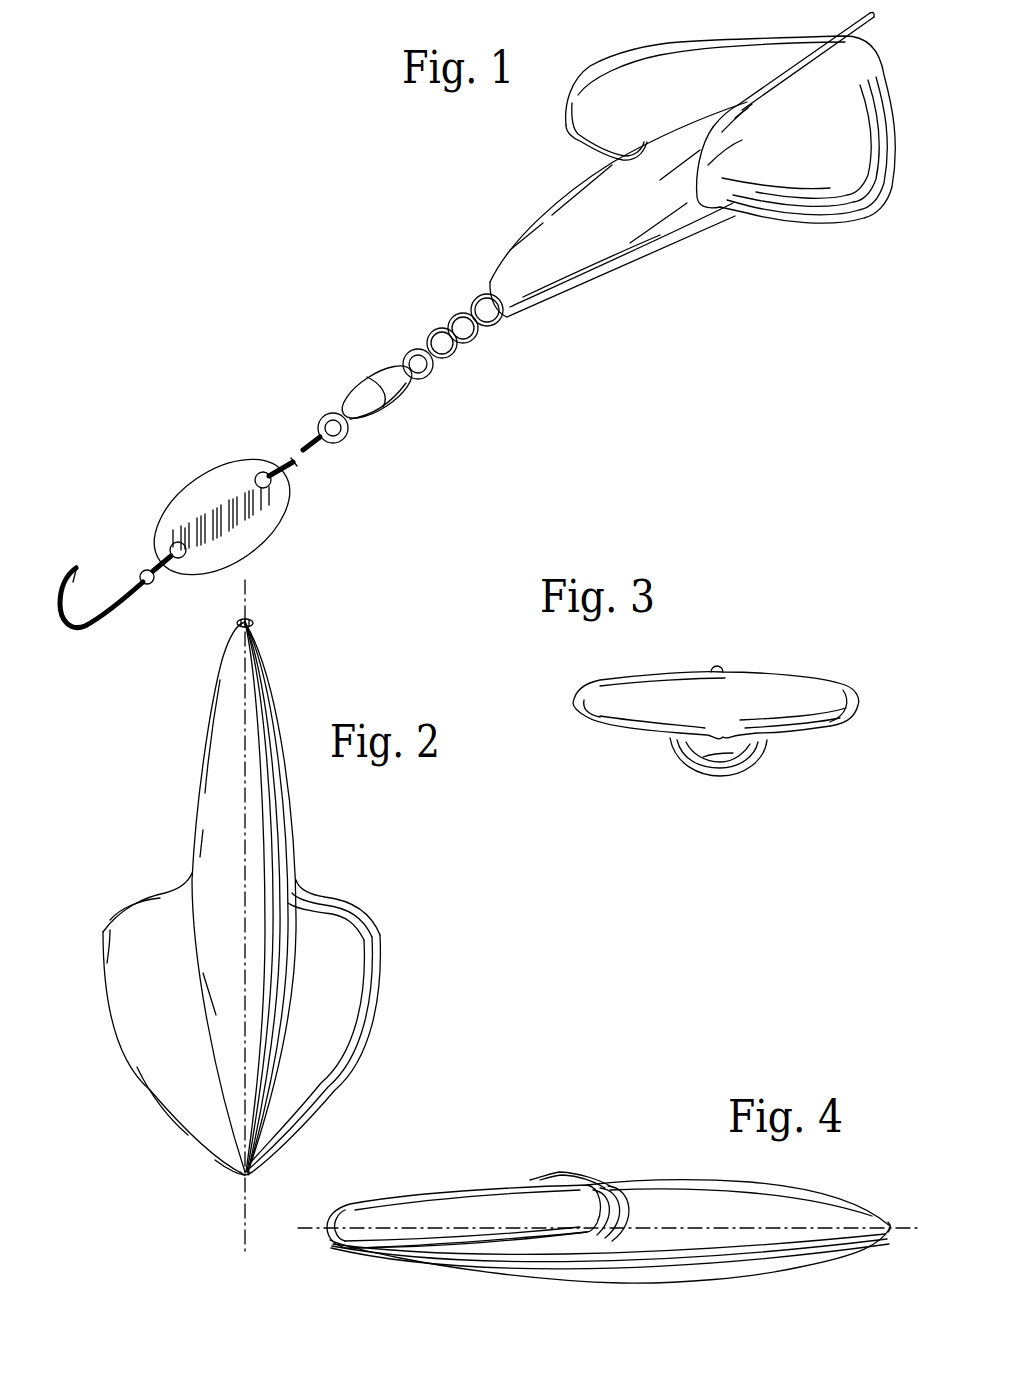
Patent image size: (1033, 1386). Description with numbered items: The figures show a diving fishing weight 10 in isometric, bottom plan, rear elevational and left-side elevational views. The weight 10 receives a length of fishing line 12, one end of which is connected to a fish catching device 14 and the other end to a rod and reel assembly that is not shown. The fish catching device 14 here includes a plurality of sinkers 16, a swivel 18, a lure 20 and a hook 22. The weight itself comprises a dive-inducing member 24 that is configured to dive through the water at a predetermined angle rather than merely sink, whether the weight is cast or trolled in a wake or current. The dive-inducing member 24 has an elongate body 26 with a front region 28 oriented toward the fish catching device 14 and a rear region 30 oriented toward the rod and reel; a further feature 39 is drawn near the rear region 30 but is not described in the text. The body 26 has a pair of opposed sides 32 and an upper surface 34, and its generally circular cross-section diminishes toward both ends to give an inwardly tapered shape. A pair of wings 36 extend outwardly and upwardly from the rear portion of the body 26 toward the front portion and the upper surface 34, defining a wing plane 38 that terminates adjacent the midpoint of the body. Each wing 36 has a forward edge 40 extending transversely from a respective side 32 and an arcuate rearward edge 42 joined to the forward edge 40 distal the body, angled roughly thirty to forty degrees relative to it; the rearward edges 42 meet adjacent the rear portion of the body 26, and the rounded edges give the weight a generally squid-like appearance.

In FIG. 1, the diving fishing weight 10 is at (556, 170).
In FIG. 2, the diving fishing weight 10 is at (131, 813).
In FIG. 3, the diving fishing weight 10 is at (558, 678).
In FIG. 4, the diving fishing weight 10 is at (481, 1132).
In FIG. 1, the fishing line 12 is at (853, 29).
In FIG. 1, the fish catching device 14 is at (334, 376).
In FIG. 1, the sinkers 16 is at (447, 316).
In FIG. 1, the swivel 18 is at (388, 413).
In FIG. 1, the lure 20 is at (271, 535).
In FIG. 1, the hook 22 is at (74, 563).
In FIG. 1, the dive-inducing member 24 is at (739, 220).
In FIG. 2, the dive-inducing member 24 is at (134, 907).
In FIG. 3, the dive-inducing member 24 is at (674, 777).
In FIG. 4, the dive-inducing member 24 is at (524, 1293).
In FIG. 1, the elongate body 26 is at (618, 209).
In FIG. 2, the elongate body 26 is at (202, 730).
In FIG. 3, the elongate body 26 is at (728, 781).
In FIG. 4, the elongate body 26 is at (750, 1284).
In FIG. 2, the front region 28 is at (255, 618).
In FIG. 4, the front region 28 is at (891, 1218).
In FIG. 2, the rear region 30 is at (243, 1181).
In FIG. 4, the rear region 30 is at (320, 1243).
In FIG. 2, the opposed sides 32 is at (196, 793).
In FIG. 3, the opposed sides 32 is at (669, 750).
In FIG. 4, the opposed sides 32 is at (698, 1245).
In FIG. 3, the upper surface 34 is at (741, 671).
In FIG. 2, the wings 36 is at (162, 1027).
In FIG. 3, the wings 36 is at (829, 683).
In FIG. 4, the wings 36 is at (400, 1229).
In FIG. 2, the wing plane 38 is at (172, 1146).
In FIG. 3, the wing plane 38 is at (728, 718).
In FIG. 4, the wing plane 38 is at (338, 1199).
In FIG. 2, the rear attachment eye 39 is at (250, 1217).
In FIG. 4, the rear attachment eye 39 is at (890, 1228).
In FIG. 2, the forward edge 40 is at (159, 892).
In FIG. 4, the forward edge 40 is at (622, 1199).
In FIG. 2, the arcuate rearward edge 42 is at (148, 1105).
In FIG. 4, the arcuate rearward edge 42 is at (484, 1232).